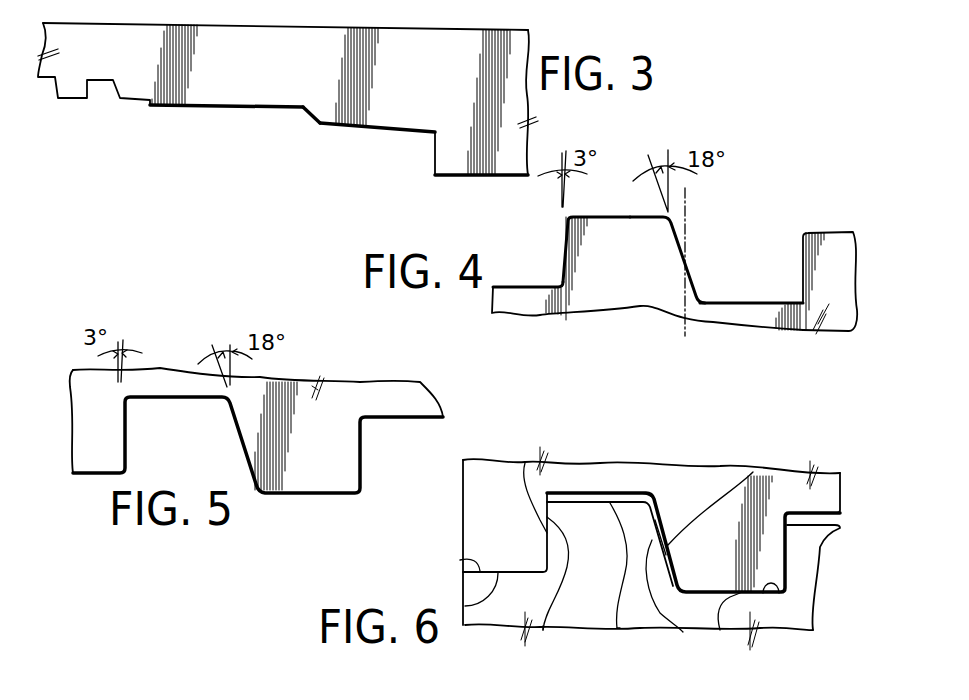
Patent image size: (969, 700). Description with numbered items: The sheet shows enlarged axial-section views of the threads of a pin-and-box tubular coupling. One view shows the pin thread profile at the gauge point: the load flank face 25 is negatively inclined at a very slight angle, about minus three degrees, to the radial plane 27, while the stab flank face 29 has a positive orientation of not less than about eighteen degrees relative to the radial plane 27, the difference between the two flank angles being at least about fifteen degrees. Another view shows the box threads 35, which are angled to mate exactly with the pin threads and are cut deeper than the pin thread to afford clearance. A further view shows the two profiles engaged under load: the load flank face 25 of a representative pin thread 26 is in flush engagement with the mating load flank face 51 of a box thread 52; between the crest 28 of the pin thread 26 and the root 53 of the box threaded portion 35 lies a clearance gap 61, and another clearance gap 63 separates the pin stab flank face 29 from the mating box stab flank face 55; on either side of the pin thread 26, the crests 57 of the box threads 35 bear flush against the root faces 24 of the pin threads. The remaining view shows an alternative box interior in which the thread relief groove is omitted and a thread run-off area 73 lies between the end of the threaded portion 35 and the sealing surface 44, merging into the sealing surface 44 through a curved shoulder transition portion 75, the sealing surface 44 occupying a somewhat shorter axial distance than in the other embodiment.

In FIG. 6, the root face 24 is at (460, 561).
In FIG. 4, the load flank face 25 is at (562, 260).
In FIG. 6, the load flank face 25 is at (525, 462).
In FIG. 6, the pin thread 26 is at (652, 566).
In FIG. 4, the radial plane 27 is at (687, 228).
In FIG. 6, the crest 28 is at (613, 493).
In FIG. 4, the stab flank face 29 is at (672, 228).
In FIG. 6, the stab flank face 29 is at (753, 472).
In FIG. 3, the box threads 35 is at (72, 99).
In FIG. 3, the sealing surface 44 is at (397, 127).
In FIG. 6, the load flank face 51 is at (543, 629).
In FIG. 6, the box thread 52 is at (651, 542).
In FIG. 6, the root 53 is at (620, 629).
In FIG. 6, the stab flank face 55 is at (683, 632).
In FIG. 6, the crest 57 is at (465, 607).
In FIG. 6, the clearance gap 61 is at (634, 494).
In FIG. 6, the clearance gap 63 is at (668, 545).
In FIG. 3, the thread run-off area 73 is at (202, 108).
In FIG. 3, the curved shoulder transition portion 75 is at (312, 117).